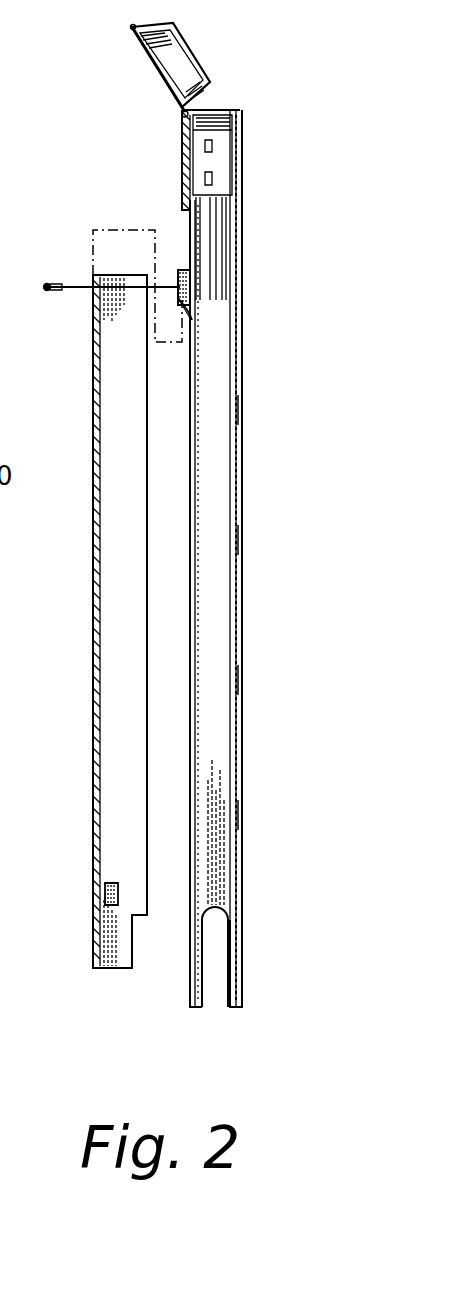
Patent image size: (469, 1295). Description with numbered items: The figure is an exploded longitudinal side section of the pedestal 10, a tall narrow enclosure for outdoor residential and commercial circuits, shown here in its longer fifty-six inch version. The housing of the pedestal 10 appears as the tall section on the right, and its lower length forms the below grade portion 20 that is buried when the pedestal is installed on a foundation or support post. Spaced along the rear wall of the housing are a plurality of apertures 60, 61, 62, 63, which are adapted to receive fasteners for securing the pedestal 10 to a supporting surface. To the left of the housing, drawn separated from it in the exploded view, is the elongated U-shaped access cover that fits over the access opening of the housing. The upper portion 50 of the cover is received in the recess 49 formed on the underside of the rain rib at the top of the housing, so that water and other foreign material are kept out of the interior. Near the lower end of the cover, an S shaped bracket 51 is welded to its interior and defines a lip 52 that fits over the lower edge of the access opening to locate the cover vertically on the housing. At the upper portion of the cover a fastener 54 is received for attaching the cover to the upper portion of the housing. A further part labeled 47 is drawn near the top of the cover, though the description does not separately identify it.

The pedestal 10 is at (244, 478).
The below grade portion 20 is at (46, 655).
The tab 47 is at (175, 283).
The recess 49 is at (193, 317).
The upper portion of the cover 50 is at (117, 275).
The S shaped bracket 51 is at (112, 890).
The lip 52 is at (112, 890).
The fastener 54 is at (47, 292).
The aperture 60 is at (243, 410).
The aperture 61 is at (243, 540).
The aperture 62 is at (243, 680).
The aperture 63 is at (243, 815).